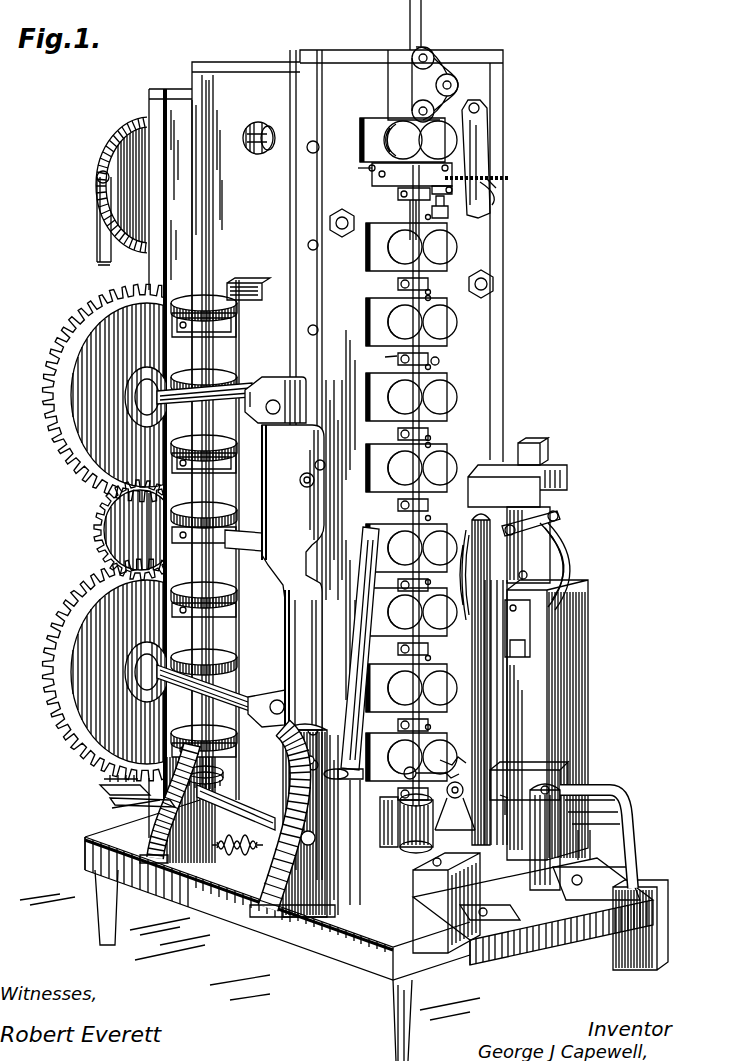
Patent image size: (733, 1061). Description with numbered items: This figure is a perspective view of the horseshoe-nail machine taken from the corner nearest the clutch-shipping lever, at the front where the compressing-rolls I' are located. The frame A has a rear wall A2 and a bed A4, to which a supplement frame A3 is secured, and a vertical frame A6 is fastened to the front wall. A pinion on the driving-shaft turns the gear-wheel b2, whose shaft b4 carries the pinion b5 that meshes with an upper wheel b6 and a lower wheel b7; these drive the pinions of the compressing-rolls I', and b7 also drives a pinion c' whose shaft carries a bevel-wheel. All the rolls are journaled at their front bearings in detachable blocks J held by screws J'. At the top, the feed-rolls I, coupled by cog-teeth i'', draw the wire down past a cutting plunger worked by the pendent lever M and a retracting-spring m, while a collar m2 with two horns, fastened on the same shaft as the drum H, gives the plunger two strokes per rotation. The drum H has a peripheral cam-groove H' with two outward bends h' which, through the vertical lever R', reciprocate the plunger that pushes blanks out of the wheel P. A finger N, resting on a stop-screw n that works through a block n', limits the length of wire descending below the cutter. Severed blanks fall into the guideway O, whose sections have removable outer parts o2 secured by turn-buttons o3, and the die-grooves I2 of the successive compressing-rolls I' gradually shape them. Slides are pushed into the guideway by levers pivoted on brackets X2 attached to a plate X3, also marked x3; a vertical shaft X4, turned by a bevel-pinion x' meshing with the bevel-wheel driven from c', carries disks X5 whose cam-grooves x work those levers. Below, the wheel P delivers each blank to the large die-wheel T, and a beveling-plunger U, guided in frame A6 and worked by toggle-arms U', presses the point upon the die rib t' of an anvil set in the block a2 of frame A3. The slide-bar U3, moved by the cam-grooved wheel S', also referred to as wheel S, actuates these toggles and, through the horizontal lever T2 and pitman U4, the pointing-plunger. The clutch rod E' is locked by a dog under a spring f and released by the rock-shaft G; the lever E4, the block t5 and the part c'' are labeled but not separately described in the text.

The frame A is at (326, 482).
The rear wall A2 is at (372, 515).
The supplement frame A3 is at (600, 826).
The bed A4 is at (344, 930).
The vertical frame A6 is at (556, 715).
The drum H is at (427, 61).
The cam-groove H' is at (150, 177).
The outward bendings of cam-groove h' is at (89, 201).
The vertical lever R' is at (92, 267).
The cog-teeth i'' is at (261, 129).
The feed-rolls I is at (408, 152).
The compressing-rolls I' is at (347, 473).
The die-grooves I2 is at (357, 166).
The pendent lever M is at (483, 159).
The retracting-spring m is at (476, 164).
The collar m2 is at (497, 188).
The finger N is at (395, 214).
The stop-screw n is at (443, 213).
The block n' is at (460, 201).
The detachable blocks J is at (422, 485).
The screws J' is at (331, 458).
The guideway O is at (440, 361).
The outer part of guideway section o2 is at (446, 436).
The catch or turn-button o3 is at (381, 434).
The cam-groove x is at (194, 437).
The horizontal wheels or disks X5 is at (183, 300).
The plate or wall x3 is at (248, 282).
The vertical shaft X4 is at (204, 360).
The plate or wall X3 is at (204, 467).
The brackets X2 is at (204, 535).
The shaft b4 is at (229, 643).
The upper gear-wheel b6 is at (138, 392).
The pinion b5 is at (130, 535).
The lower gear-wheel b7 is at (137, 670).
The vertical rock-shaft G is at (284, 534).
The lever E4 is at (351, 653).
The rod or bar E' is at (315, 818).
The wheel P is at (391, 842).
The block t5 is at (407, 917).
The slide-bar U3 is at (517, 507).
The lever T2 is at (560, 515).
The cam-grooved wheel S is at (564, 565).
The cam-grooved wheel S' is at (564, 566).
The pitman U4 is at (468, 640).
The toggle-arms U' is at (500, 712).
The beveling-plunger U is at (529, 779).
The beveling-die rib t' is at (508, 804).
The die-wheel T is at (439, 798).
The gear-wheel b2 is at (453, 768).
The raised block or casting a2 is at (533, 891).
The pinion c' is at (126, 791).
The bevel-pinion x' is at (120, 808).
The arm c'' is at (196, 803).
The spring f is at (237, 861).